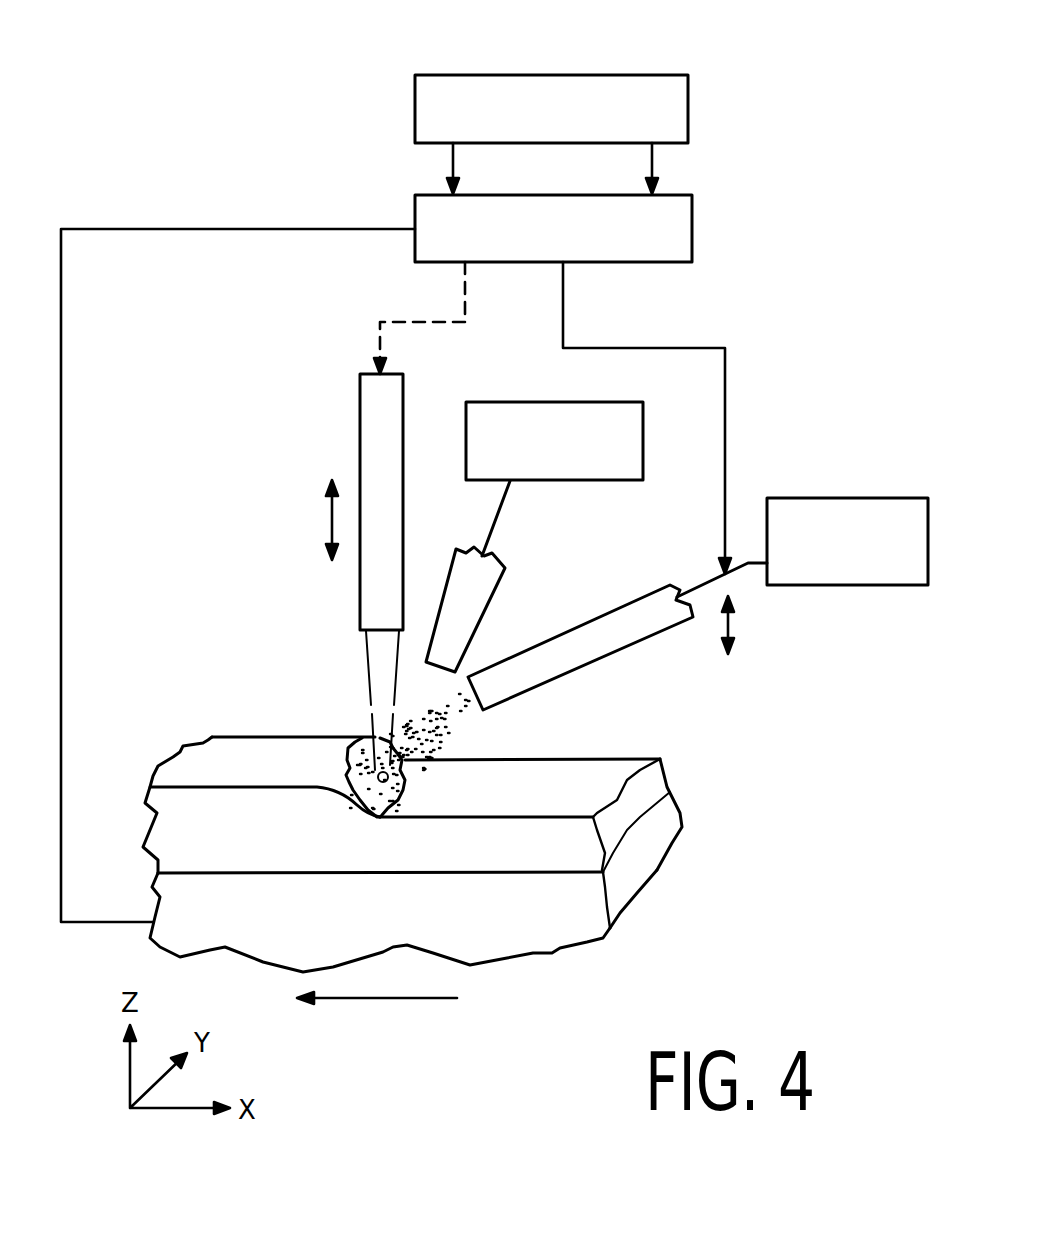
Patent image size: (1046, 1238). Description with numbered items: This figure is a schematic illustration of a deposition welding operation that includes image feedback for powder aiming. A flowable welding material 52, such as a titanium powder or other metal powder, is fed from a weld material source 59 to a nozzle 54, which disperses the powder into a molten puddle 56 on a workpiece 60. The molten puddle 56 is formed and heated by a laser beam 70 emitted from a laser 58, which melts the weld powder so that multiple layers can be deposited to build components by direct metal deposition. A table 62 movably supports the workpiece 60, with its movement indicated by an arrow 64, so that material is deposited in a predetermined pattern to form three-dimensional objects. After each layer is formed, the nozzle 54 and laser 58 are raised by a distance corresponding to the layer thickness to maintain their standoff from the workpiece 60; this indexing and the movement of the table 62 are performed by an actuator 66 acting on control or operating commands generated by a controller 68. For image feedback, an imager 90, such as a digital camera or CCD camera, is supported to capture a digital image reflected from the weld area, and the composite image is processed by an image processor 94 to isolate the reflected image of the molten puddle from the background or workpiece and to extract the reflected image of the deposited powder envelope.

The controller 68 is at (512, 76).
The actuator 66 is at (693, 212).
The laser 58 is at (359, 433).
The laser beam 70 is at (375, 667).
The image processor 94 is at (632, 462).
The imager 90 is at (480, 588).
The weld material source 59 is at (866, 498).
The nozzle 54 is at (633, 643).
The flowable welding material 52 is at (458, 720).
The molten puddle 56 is at (357, 738).
The workpiece 60 is at (649, 782).
The table 62 is at (633, 875).
The arrow 64 is at (403, 1000).